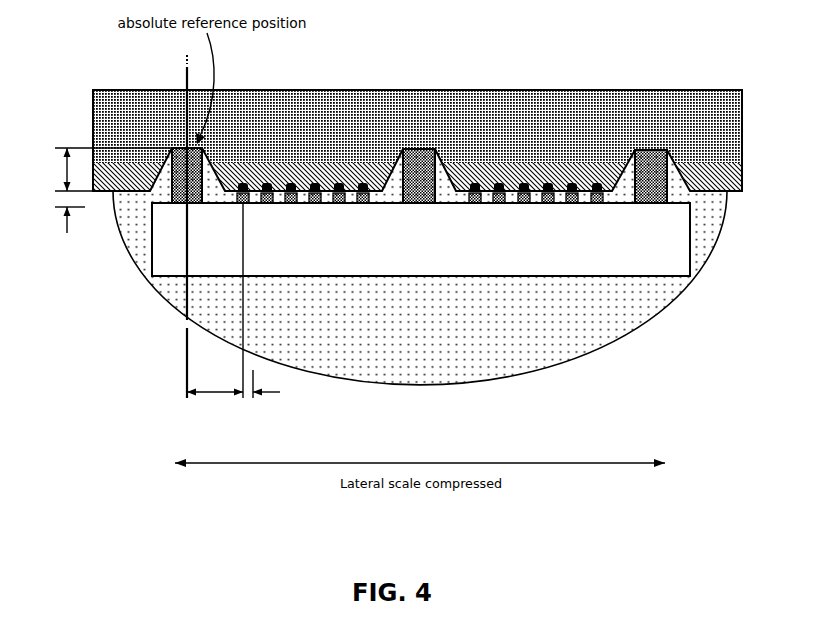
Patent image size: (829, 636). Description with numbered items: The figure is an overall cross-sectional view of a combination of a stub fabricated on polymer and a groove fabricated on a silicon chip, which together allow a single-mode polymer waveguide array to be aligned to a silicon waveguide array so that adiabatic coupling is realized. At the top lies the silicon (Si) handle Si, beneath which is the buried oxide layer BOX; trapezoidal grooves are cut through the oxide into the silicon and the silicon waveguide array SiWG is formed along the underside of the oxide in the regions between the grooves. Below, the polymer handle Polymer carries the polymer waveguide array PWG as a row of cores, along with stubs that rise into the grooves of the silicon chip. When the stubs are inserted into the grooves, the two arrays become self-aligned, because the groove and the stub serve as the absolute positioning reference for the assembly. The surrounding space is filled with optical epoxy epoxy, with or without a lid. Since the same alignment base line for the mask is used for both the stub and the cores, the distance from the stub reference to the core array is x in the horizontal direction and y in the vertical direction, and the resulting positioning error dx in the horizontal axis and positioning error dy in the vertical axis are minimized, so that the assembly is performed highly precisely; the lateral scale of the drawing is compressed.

The optical epoxy is at (420, 288).
The silicon (Si) chip Si is at (417, 126).
The buried oxide (BOX) layer BOX is at (417, 177).
The polymer handle Polymer is at (421, 239).
The silicon waveguide (SiWG) array SiWG is at (233, 175).
The single-mode polymer waveguide (PWG) array PWG is at (375, 207).
The horizontal distance x is at (215, 403).
The positioning error δx dx is at (251, 398).
The vertical distance y is at (112, 169).
The positioning error δy dy is at (58, 197).